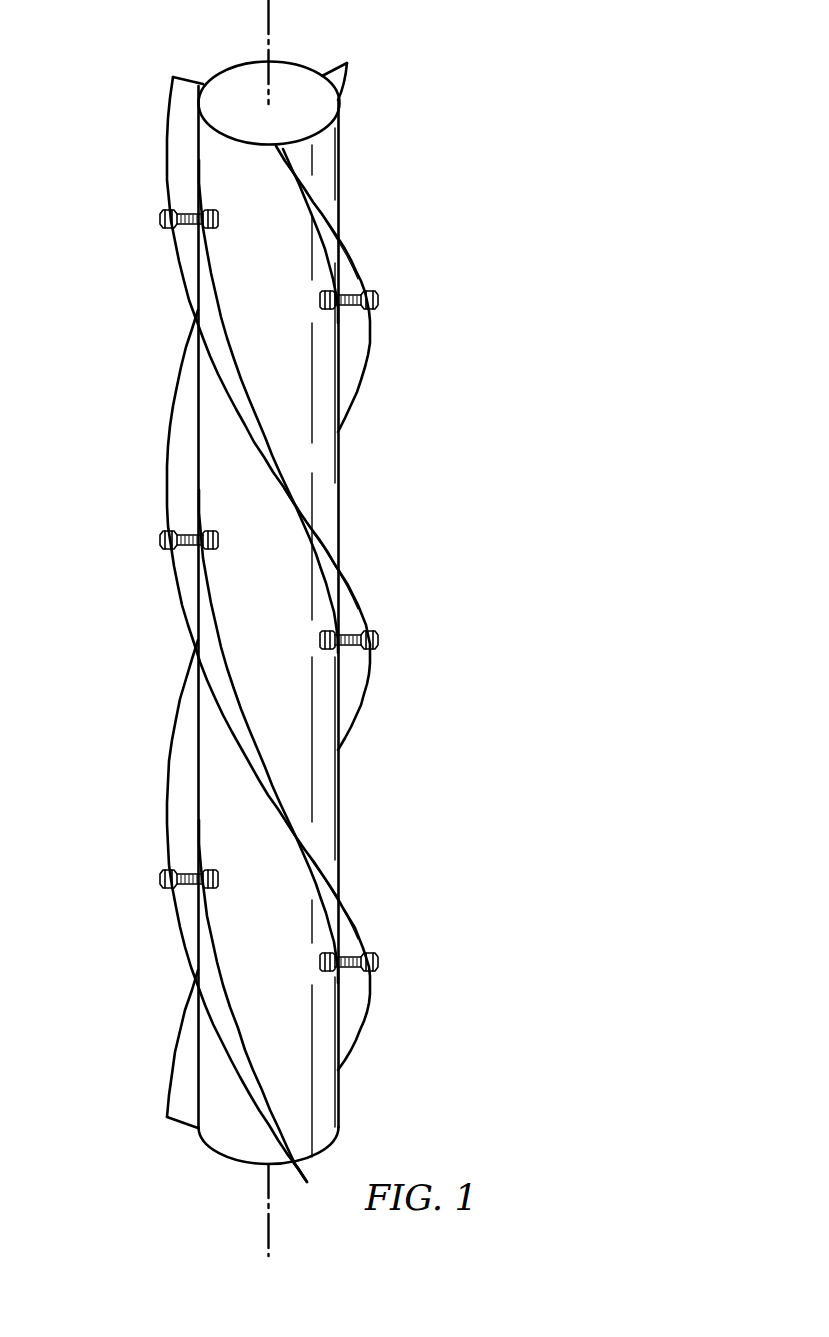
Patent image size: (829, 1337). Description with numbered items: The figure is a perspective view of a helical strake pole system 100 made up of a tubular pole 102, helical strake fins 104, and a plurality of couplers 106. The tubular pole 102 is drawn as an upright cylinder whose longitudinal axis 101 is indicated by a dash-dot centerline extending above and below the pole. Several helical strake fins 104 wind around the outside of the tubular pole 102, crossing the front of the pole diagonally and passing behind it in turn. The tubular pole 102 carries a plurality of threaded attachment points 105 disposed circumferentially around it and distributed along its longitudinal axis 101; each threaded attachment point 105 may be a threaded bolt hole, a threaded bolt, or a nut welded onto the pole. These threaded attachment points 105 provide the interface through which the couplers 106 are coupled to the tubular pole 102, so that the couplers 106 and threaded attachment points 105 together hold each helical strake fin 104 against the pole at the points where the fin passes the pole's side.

The helical strake pole system 100 is at (434, 162).
The longitudinal axis 101 is at (272, 8).
The tubular pole 102 is at (315, 470).
The helical strake fin 104 is at (183, 128).
The threaded attachment point 105 is at (218, 219).
The coupler 106 is at (160, 219).